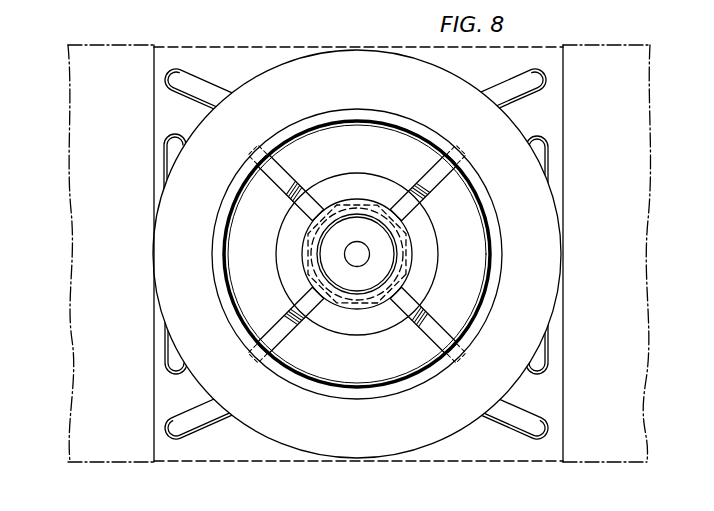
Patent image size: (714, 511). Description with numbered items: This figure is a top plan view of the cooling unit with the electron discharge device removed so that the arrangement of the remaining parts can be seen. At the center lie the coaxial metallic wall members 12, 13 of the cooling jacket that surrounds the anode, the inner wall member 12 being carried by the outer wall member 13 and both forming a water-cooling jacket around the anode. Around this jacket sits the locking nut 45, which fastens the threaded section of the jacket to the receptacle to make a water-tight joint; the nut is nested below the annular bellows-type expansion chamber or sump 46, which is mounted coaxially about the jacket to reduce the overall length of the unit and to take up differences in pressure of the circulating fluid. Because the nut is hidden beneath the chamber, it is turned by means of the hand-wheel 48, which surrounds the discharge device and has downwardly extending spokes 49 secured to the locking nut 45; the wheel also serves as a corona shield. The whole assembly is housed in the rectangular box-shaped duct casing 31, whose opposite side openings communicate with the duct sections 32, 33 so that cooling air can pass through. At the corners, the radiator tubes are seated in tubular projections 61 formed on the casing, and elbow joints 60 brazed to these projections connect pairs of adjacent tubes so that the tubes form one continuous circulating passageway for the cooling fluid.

The inner wall member 12 is at (318, 258).
The outer wall member 13 is at (367, 193).
The duct casing 31 is at (486, 448).
The duct section 32 is at (72, 333).
The duct section 33 is at (633, 420).
The locking nut 45 is at (336, 202).
The expansion chamber 46 is at (515, 133).
The hand-wheel 48 is at (433, 136).
The spokes 49 is at (282, 322).
The elbow joints 60 is at (357, 236).
The tubular projections 61 is at (178, 65).